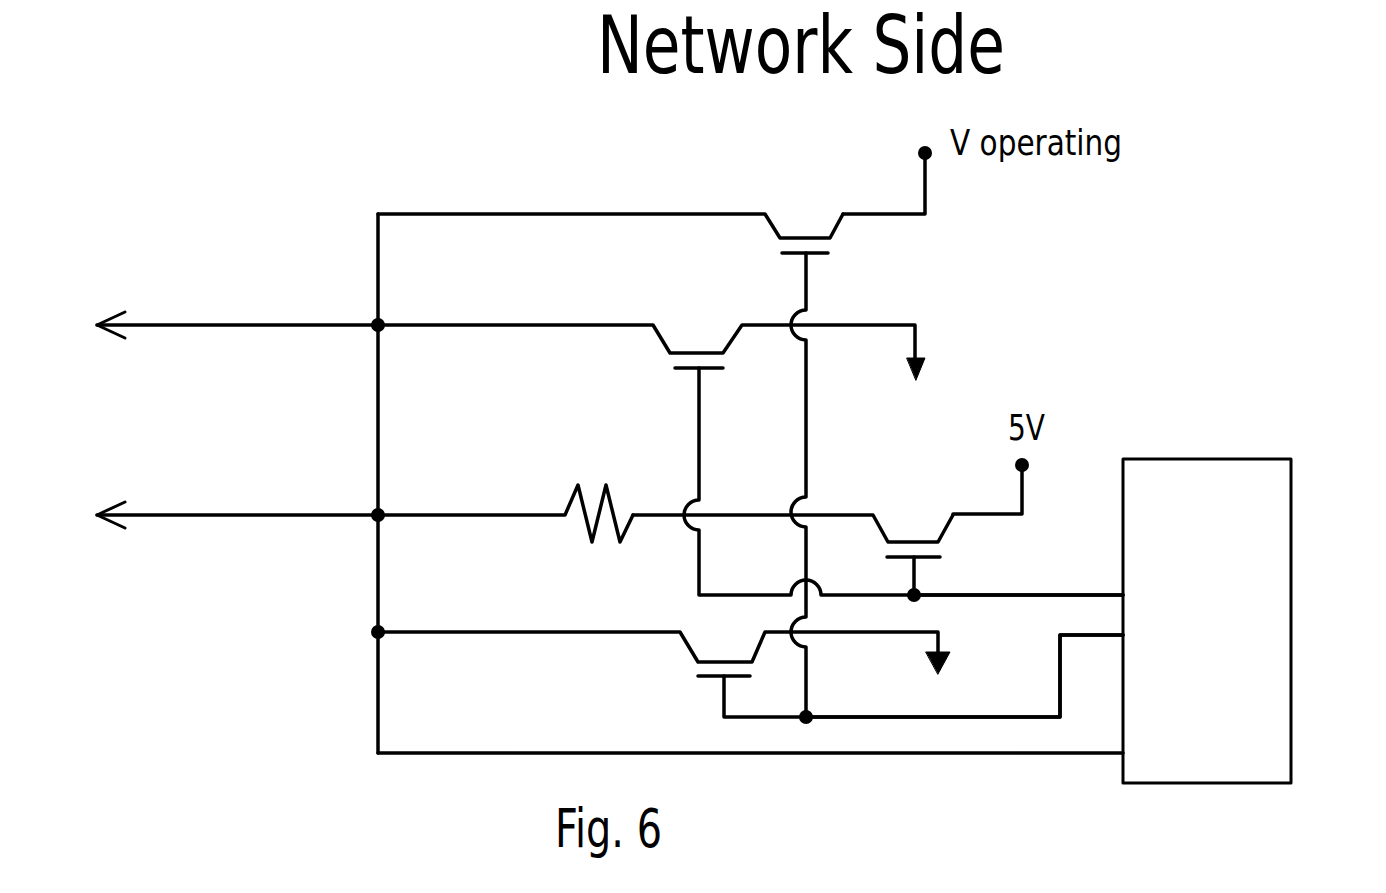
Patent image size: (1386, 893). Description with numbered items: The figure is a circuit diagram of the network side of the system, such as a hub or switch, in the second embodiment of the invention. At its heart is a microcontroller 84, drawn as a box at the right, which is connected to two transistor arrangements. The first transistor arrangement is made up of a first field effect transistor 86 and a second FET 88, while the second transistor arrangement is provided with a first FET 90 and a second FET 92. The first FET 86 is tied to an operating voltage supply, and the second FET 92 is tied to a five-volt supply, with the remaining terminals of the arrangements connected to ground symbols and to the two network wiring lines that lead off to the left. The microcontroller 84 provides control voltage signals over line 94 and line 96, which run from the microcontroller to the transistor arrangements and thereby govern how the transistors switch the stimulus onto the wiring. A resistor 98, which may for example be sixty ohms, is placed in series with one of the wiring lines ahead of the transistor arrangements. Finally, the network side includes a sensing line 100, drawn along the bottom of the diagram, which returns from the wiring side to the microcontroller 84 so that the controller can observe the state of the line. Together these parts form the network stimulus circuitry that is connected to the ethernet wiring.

The microcontroller 84 is at (1265, 602).
The first field effect transistor 86 is at (840, 225).
The second FET 88 is at (683, 647).
The first FET 90 is at (660, 343).
The second FET 92 is at (947, 532).
The line 94 is at (1068, 595).
The line 96 is at (1078, 637).
The resistor 98 is at (585, 520).
The sensing line 100 is at (913, 755).